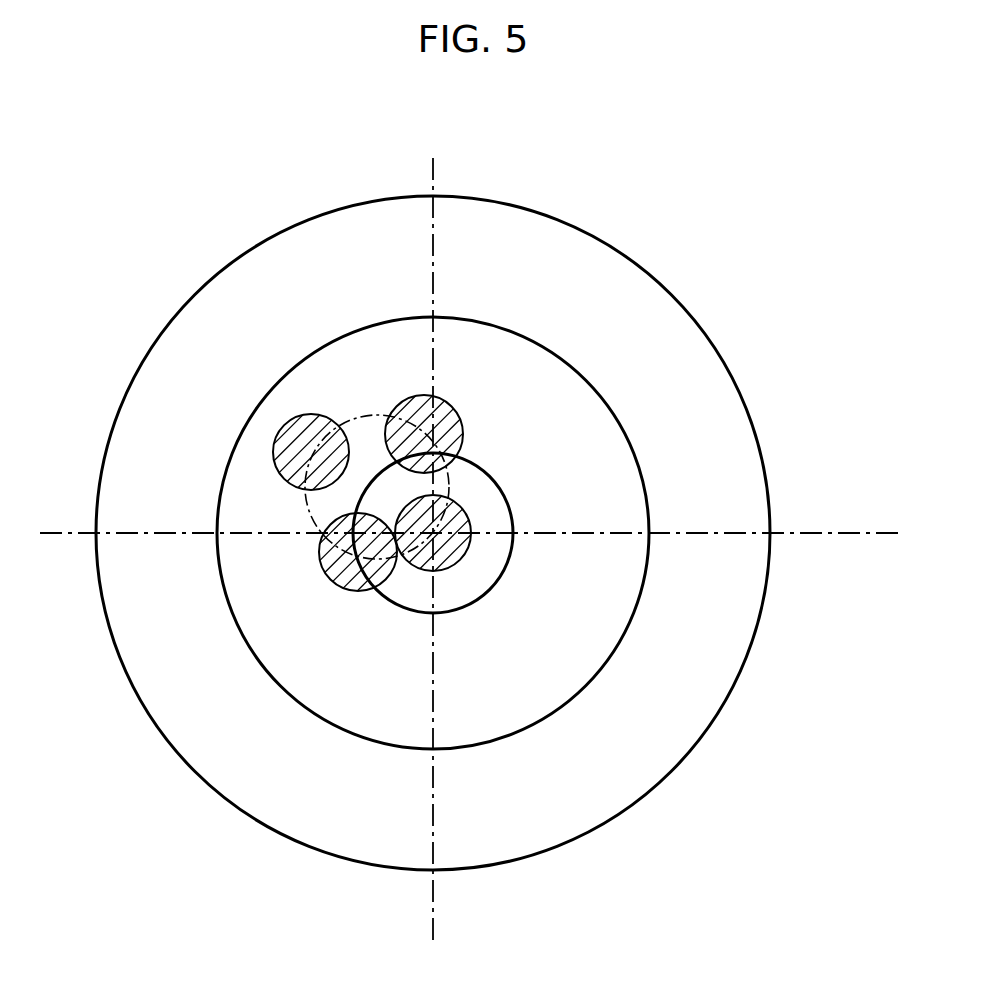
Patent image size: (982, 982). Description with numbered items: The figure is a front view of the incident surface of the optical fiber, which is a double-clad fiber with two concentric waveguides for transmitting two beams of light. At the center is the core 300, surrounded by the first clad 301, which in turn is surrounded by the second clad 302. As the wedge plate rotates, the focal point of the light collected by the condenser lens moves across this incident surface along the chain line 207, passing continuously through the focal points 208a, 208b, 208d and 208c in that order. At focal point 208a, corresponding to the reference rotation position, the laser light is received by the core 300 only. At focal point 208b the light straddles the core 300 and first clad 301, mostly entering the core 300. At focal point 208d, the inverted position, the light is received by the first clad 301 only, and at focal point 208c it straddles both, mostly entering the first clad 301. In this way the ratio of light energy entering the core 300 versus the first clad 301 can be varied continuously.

The chain line 207 is at (307, 517).
The focal point 208a is at (462, 510).
The focal point 208b is at (323, 570).
The focal point 208c is at (447, 415).
The focal point 208d is at (290, 438).
The core 300 is at (460, 592).
The first clad 301 is at (612, 603).
The second clad 302 is at (755, 556).